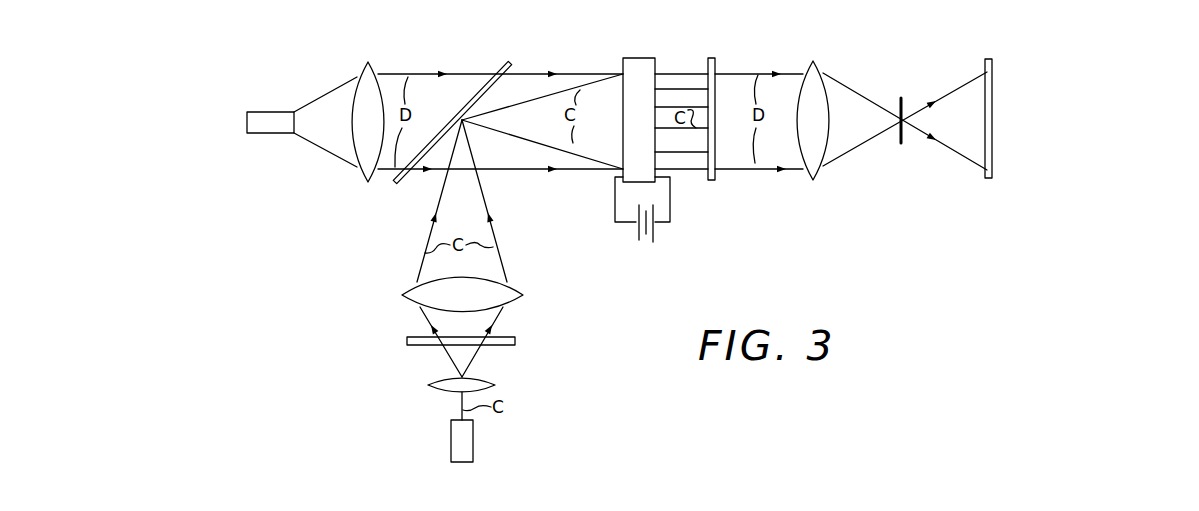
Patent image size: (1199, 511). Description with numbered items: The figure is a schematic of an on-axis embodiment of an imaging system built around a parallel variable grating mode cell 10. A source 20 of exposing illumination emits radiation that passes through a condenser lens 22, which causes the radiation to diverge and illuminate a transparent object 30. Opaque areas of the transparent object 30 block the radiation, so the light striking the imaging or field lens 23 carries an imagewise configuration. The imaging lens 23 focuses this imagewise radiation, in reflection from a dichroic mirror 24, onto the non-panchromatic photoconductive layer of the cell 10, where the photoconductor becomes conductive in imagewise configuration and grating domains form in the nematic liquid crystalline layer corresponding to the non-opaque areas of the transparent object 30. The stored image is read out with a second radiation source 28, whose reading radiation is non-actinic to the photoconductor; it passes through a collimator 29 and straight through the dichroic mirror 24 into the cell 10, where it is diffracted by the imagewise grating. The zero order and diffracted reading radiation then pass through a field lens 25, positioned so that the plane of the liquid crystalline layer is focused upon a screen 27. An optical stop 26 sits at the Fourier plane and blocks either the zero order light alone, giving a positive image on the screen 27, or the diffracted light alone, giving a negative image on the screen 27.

The parallel variable grating mode cell 10 is at (660, 50).
The source of exposing illumination 20 is at (465, 447).
The condenser lens 22 is at (493, 383).
The imaging or field lens 23 is at (508, 293).
The dichroic mirror 24 is at (479, 92).
The field lens 25 is at (820, 70).
The optical stop 26 is at (903, 110).
The screen 27 is at (993, 102).
The radiation source 28 is at (263, 117).
The collimator 29 is at (368, 75).
The transparent object 30 is at (513, 337).